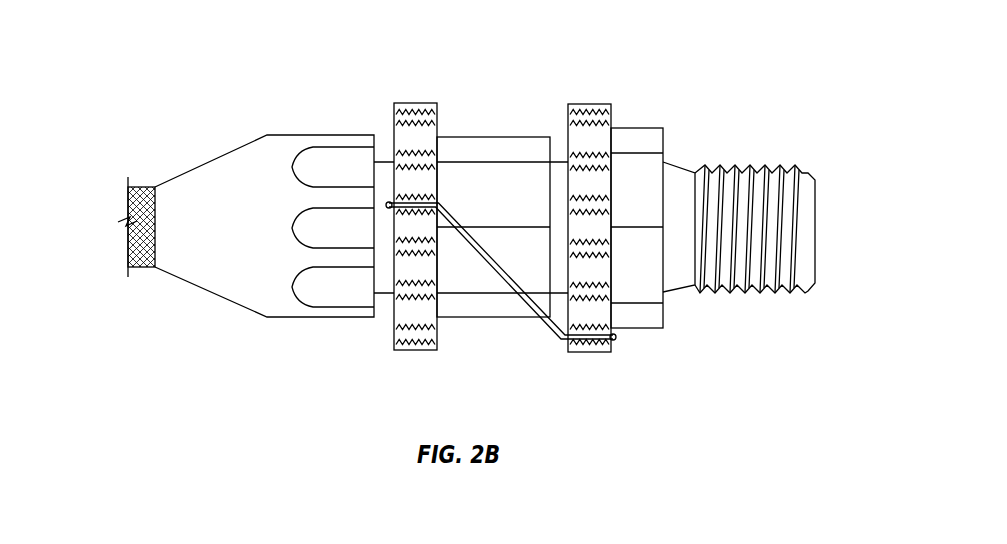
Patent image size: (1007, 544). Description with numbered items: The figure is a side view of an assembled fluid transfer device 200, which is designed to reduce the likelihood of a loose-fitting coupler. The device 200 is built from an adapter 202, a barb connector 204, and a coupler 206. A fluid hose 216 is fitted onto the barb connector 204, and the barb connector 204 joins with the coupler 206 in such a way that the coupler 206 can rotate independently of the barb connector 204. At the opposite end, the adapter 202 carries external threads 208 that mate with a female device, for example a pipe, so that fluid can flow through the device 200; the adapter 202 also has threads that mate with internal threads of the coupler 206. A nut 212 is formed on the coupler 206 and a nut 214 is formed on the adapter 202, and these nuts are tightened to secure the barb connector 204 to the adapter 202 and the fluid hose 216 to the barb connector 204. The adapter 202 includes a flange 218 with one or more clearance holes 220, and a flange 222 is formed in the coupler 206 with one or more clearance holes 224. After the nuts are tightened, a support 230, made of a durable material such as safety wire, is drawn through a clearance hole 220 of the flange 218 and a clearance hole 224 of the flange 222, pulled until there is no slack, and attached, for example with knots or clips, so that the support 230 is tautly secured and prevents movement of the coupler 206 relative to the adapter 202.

The fluid transfer device 200 is at (231, 78).
The adapter 202 is at (665, 314).
The barb connector 204 is at (222, 286).
The coupler 206 is at (486, 309).
The external threads 208 is at (766, 171).
The nut 212 is at (526, 144).
The nut 214 is at (637, 139).
The fluid hose 216 is at (142, 186).
The flange 218 is at (583, 106).
The clearance holes 220 is at (610, 298).
The flange 222 is at (410, 106).
The clearance holes 224 is at (400, 336).
The supports 230 is at (535, 311).